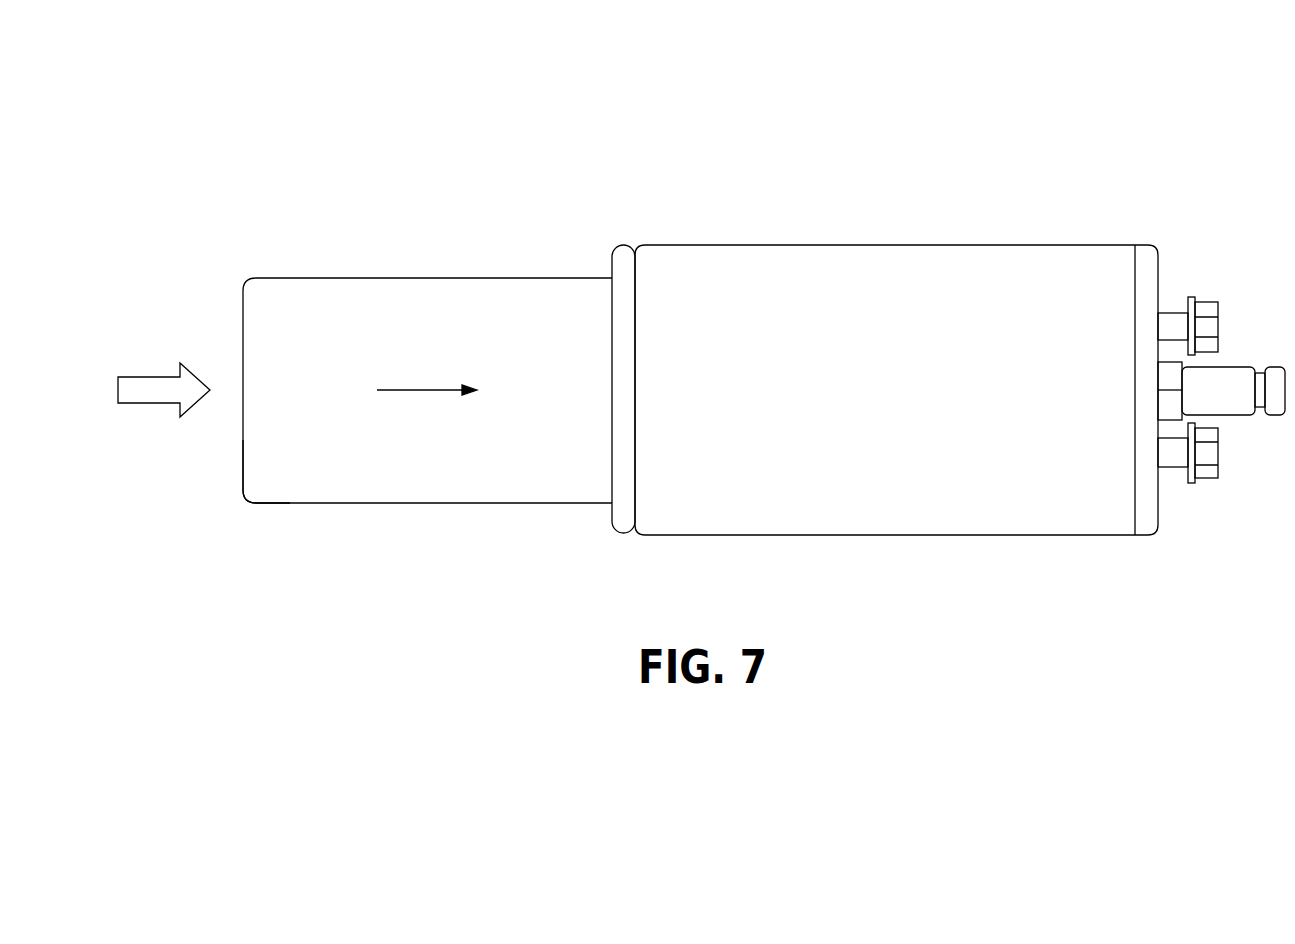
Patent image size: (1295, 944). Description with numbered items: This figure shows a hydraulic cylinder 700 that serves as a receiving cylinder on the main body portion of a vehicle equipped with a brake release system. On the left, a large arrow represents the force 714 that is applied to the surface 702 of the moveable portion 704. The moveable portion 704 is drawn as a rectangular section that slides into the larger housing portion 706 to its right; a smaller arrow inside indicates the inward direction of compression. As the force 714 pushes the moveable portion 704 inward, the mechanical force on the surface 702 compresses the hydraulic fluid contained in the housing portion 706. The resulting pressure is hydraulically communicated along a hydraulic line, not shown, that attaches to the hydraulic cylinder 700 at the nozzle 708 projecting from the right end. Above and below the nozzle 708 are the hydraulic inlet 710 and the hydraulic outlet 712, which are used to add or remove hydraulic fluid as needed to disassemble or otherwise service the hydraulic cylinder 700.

The hydraulic cylinder 700 is at (866, 118).
The surface 702 is at (243, 448).
The moveable portion 704 is at (418, 503).
The housing portion 706 is at (912, 535).
The nozzle 708 is at (1240, 415).
The hydraulic inlet 710 is at (1207, 300).
The hydraulic outlet 712 is at (1207, 483).
The force 714 is at (155, 377).